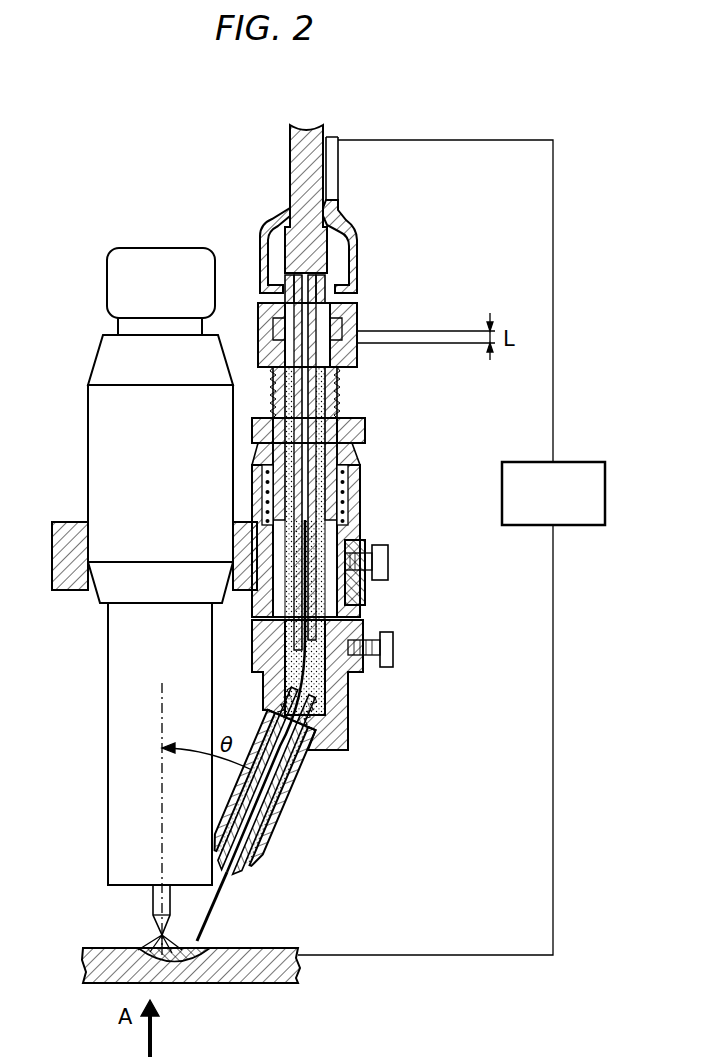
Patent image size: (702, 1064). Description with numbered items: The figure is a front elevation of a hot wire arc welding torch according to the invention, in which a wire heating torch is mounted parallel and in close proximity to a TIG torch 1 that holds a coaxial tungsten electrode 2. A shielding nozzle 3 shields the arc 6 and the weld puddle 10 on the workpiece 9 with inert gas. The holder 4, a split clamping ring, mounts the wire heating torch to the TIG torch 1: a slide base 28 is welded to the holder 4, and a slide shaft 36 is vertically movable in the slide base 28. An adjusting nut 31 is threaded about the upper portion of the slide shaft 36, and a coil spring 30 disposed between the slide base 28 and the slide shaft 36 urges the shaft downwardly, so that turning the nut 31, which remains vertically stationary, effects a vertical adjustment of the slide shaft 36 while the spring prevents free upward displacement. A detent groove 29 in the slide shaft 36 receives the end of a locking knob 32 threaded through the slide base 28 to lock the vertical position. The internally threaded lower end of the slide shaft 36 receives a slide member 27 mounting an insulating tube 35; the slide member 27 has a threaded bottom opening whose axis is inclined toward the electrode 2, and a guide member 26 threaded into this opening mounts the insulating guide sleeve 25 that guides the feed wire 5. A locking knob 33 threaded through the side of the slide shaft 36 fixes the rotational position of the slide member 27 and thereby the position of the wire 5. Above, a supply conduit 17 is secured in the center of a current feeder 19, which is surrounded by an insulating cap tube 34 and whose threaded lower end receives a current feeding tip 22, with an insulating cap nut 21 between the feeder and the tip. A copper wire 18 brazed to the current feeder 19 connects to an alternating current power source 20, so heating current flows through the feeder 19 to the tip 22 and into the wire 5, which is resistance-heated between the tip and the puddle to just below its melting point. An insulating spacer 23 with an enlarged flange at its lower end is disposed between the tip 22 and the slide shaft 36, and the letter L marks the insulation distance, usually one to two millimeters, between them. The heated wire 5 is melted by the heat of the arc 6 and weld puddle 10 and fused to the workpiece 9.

The TIG torch 1 is at (105, 432).
The tungsten electrode 2 is at (150, 902).
The shielding nozzle 3 is at (112, 718).
The holder 4 is at (52, 562).
The feed wire 5 is at (208, 906).
The arc 6 is at (150, 945).
The workpiece 9 is at (268, 985).
The weld puddle 10 is at (184, 958).
The supply conduit 17 is at (312, 125).
The copper wire 18 is at (332, 140).
The current feeder 19 is at (262, 240).
The alternating current power source 20 is at (583, 462).
The insulating cap nut 21 is at (357, 325).
The current feeding tip 22 is at (320, 292).
The insulating spacer 23 is at (330, 392).
The insulating guide sleeve 25 is at (272, 765).
The guide member 26 is at (264, 796).
The slide member 27 is at (345, 738).
The slide base 28 is at (362, 498).
The detent groove 29 is at (352, 590).
The coil spring 30 is at (362, 462).
The adjusting nut 31 is at (365, 430).
The locking knob 32 is at (386, 562).
The locking knob 33 is at (393, 650).
The insulating cap tube 34 is at (357, 236).
The insulating tube 35 is at (322, 690).
The slide shaft 36 is at (338, 404).